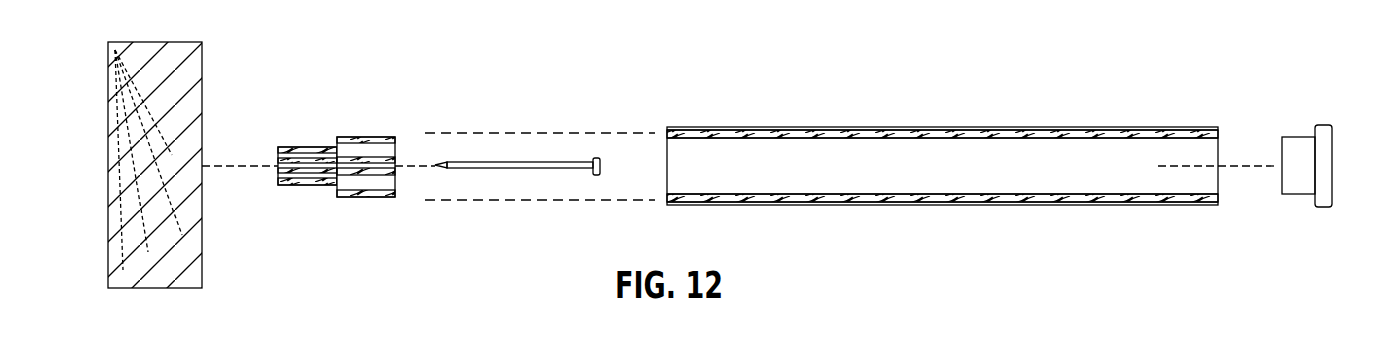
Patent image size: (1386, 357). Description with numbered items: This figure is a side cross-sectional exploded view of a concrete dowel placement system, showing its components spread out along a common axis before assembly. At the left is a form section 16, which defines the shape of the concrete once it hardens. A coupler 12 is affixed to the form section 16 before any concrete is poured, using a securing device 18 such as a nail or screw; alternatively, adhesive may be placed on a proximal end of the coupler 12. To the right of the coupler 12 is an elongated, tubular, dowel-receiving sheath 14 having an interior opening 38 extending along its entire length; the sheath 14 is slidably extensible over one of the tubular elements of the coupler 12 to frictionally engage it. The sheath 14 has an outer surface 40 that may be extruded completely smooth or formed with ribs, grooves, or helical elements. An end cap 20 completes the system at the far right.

The coupler 12 is at (337, 122).
The sheath 14 is at (942, 132).
The form section 16 is at (103, 128).
The securing device 18 is at (520, 157).
The end cap 20 is at (1303, 127).
The interior opening 38 is at (940, 175).
The outer surface 40 is at (763, 125).